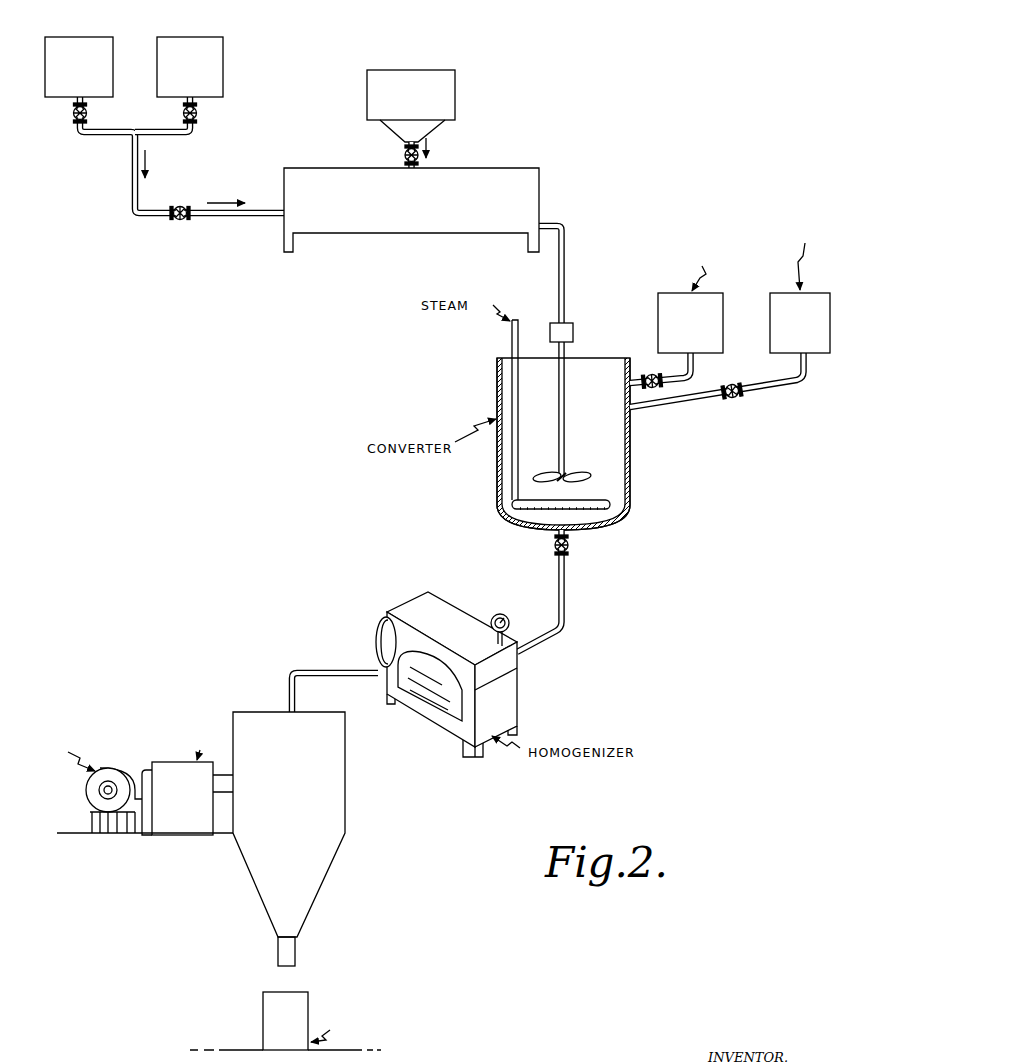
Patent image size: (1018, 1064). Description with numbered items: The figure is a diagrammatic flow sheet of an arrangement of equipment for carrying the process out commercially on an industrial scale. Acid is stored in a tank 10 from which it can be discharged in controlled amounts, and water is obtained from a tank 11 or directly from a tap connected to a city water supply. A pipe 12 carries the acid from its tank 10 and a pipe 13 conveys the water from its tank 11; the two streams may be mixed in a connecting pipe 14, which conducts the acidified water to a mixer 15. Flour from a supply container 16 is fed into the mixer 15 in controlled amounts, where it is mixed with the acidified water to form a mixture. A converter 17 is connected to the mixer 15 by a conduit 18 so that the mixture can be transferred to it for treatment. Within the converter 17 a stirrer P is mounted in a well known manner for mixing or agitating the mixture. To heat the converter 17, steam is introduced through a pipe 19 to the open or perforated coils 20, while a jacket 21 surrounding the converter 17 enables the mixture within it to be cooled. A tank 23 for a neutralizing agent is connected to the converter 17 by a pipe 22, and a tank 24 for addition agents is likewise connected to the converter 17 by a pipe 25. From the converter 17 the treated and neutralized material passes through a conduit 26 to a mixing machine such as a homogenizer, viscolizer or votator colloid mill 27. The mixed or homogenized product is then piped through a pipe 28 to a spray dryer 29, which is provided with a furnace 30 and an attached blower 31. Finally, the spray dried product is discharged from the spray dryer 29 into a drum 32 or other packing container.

The tank 10 is at (94, 37).
The tank 11 is at (208, 37).
The pipe 12 is at (72, 117).
The pipe 13 is at (200, 118).
The connecting pipe 14 is at (131, 180).
The mixer 15 is at (411, 210).
The supply container 16 is at (456, 85).
The converter 17 is at (601, 368).
The conduit 18 is at (566, 229).
The pipe 19 is at (510, 330).
The perforated coils 20 is at (589, 513).
The jacket 21 is at (631, 460).
The pipe 22 is at (698, 371).
The tank 23 is at (658, 300).
The tank 24 is at (768, 300).
The pipe 25 is at (786, 385).
The conduit 26 is at (564, 591).
The homogenizer 27 is at (506, 693).
The pipe 28 is at (347, 670).
The spray dryer 29 is at (330, 758).
The furnace 30 is at (172, 822).
The blower 31 is at (86, 795).
The drum 32 is at (263, 1007).
The stirrer P is at (579, 476).